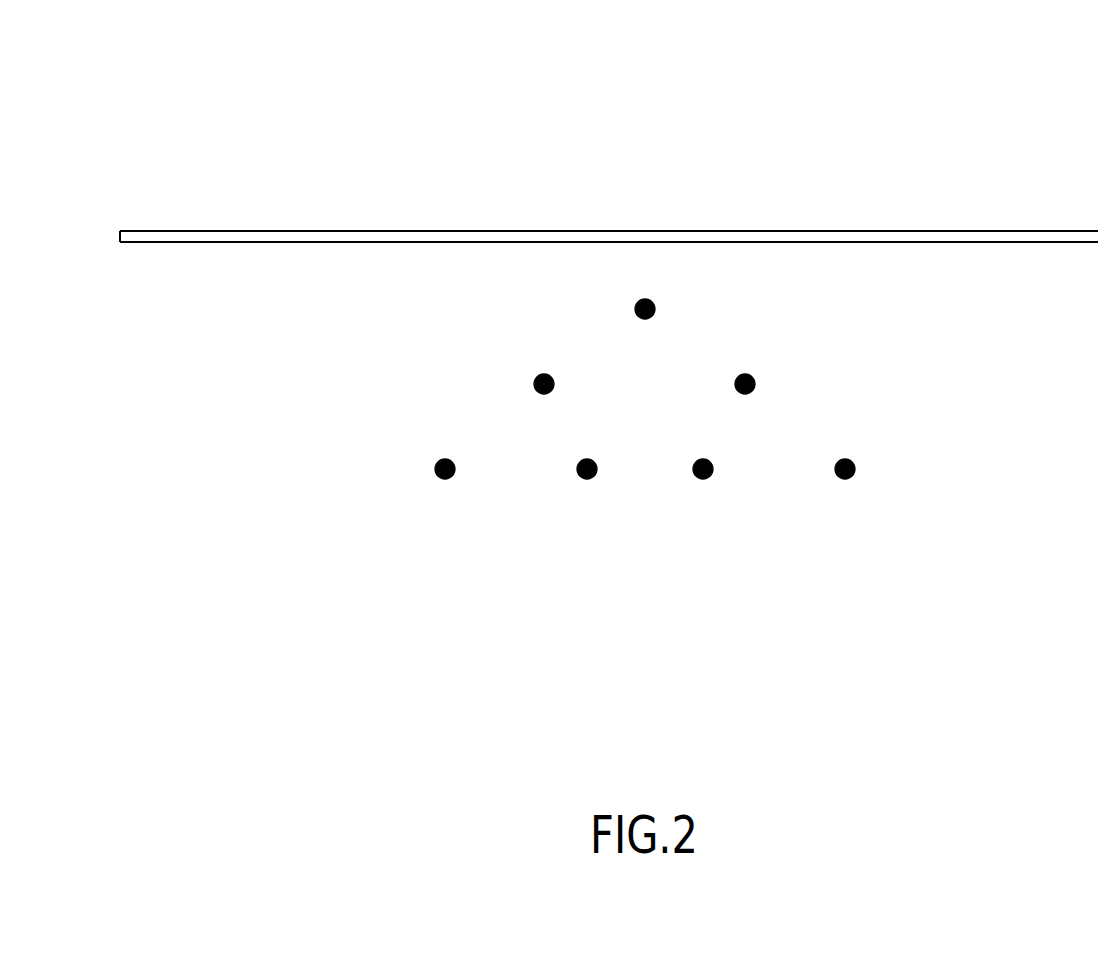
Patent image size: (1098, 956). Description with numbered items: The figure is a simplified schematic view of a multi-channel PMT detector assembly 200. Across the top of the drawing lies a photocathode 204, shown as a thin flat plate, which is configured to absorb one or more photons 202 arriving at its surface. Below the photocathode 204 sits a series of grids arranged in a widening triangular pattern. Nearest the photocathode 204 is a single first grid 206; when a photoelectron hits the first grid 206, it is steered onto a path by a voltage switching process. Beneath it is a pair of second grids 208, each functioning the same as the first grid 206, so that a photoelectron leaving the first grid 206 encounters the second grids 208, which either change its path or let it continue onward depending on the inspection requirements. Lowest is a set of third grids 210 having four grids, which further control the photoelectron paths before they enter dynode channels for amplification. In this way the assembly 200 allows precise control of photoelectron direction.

The multi-channel PMT detector assembly 200 is at (177, 73).
The photons 202 is at (642, 140).
The photocathode 204 is at (151, 231).
The first grid 206 is at (683, 309).
The second grids 208 is at (775, 384).
The third grids 210 is at (870, 469).